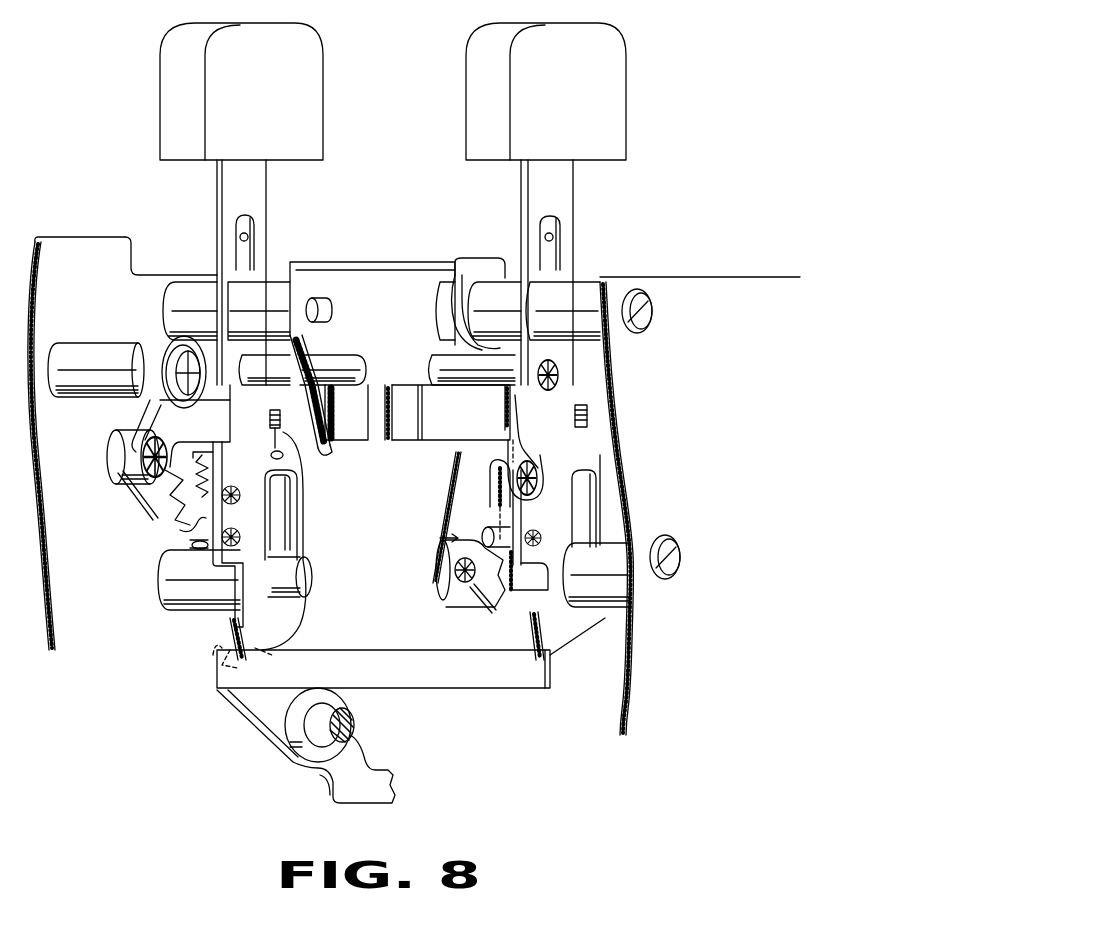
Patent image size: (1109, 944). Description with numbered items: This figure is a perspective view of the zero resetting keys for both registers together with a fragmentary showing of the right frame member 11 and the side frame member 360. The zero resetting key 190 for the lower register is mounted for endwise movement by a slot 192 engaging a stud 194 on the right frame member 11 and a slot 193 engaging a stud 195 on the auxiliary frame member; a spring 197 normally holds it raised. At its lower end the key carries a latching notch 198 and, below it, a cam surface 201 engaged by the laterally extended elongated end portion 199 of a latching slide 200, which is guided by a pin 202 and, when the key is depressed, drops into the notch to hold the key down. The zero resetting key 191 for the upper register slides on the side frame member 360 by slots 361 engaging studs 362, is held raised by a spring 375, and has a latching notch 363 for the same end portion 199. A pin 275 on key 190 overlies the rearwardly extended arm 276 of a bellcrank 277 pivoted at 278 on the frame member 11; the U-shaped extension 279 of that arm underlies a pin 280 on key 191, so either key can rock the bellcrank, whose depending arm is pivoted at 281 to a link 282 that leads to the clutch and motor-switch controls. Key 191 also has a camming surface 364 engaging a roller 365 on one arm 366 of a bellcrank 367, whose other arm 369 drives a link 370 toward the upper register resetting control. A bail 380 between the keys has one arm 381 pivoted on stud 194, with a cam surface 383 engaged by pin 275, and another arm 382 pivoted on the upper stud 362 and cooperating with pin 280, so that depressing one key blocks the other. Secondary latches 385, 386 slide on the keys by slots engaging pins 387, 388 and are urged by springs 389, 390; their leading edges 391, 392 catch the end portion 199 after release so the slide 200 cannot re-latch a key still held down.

The right frame member 11 is at (85, 244).
The zero resetting key 190 is at (303, 51).
The zero resetting key 191 is at (616, 51).
The slot 192 is at (248, 240).
The slot 193 is at (284, 512).
The stud 194 is at (326, 309).
The stud 195 is at (306, 568).
The spring 197 is at (268, 432).
The latching notch 198 is at (228, 622).
The laterally extended elongated end portion 199 is at (296, 652).
The latching slide 200 is at (370, 772).
The cam surface 201 is at (228, 642).
The pin 202 is at (352, 719).
The pin 275 is at (336, 358).
The rearwardly extended arm 276 is at (338, 443).
The bellcrank 277 is at (160, 352).
The pivot 278 is at (172, 350).
The extension 279 is at (426, 443).
The pin 280 is at (446, 358).
The pivot 281 is at (128, 484).
The link 282 is at (142, 510).
The side frame member 360 is at (708, 281).
The slots 361 is at (552, 238).
The studs 362 is at (582, 280).
The latching notch 363 is at (530, 618).
The camming surface 364 is at (522, 456).
The roller 365 is at (490, 483).
The arm 366 is at (522, 445).
The bellcrank 367 is at (442, 538).
The arm 369 is at (455, 498).
The link 370 is at (478, 600).
The spring 375 is at (590, 412).
The bail 380 is at (386, 260).
The arm 381 is at (330, 289).
The arm 382 is at (476, 268).
The cam surface 383 is at (324, 452).
The secondary latch 385 is at (215, 572).
The secondary latch 386 is at (582, 590).
The pin 387 is at (240, 500).
The pin 388 is at (540, 530).
The spring 389 is at (182, 530).
The spring 390 is at (511, 518).
The leading edge 391 is at (222, 582).
The leading edge 392 is at (512, 598).